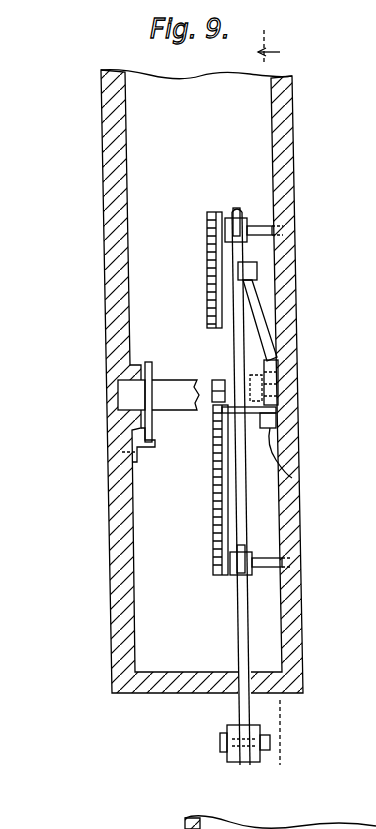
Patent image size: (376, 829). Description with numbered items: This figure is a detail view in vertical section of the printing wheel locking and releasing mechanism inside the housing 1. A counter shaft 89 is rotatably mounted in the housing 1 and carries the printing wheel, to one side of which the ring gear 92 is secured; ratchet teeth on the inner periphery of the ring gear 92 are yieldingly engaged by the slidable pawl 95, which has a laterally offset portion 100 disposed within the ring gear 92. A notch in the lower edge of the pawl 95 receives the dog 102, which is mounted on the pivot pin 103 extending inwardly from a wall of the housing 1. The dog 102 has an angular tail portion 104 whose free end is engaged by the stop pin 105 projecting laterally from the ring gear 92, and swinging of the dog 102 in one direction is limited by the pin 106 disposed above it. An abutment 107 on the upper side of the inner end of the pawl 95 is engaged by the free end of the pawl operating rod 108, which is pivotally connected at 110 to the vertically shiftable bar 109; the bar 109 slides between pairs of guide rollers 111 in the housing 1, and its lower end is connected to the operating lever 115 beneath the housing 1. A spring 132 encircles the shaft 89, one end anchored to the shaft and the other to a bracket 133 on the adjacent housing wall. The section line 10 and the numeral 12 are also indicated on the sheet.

The housing 1 is at (95, 151).
The section line 10 is at (279, 403).
The adjacent part 12 is at (280, 770).
The counter shaft 89 is at (184, 382).
The ring gear 92 is at (205, 268).
The pawl 95 is at (285, 381).
The laterally offset portion 100 is at (225, 392).
The dog 102 is at (285, 421).
The pivot pin 103 is at (292, 478).
The angular tail portion 104 is at (222, 388).
The stop pin 105 is at (221, 422).
The pin 106 is at (278, 408).
The abutment 107 is at (280, 370).
The pawl operating rod 108 is at (254, 318).
The vertically shiftable bar 109 is at (238, 628).
The pivotal connection 110 is at (258, 272).
The guide rollers 111 is at (237, 215).
The operating lever 115 is at (245, 764).
The spring 132 is at (152, 362).
The bracket 133 is at (155, 450).